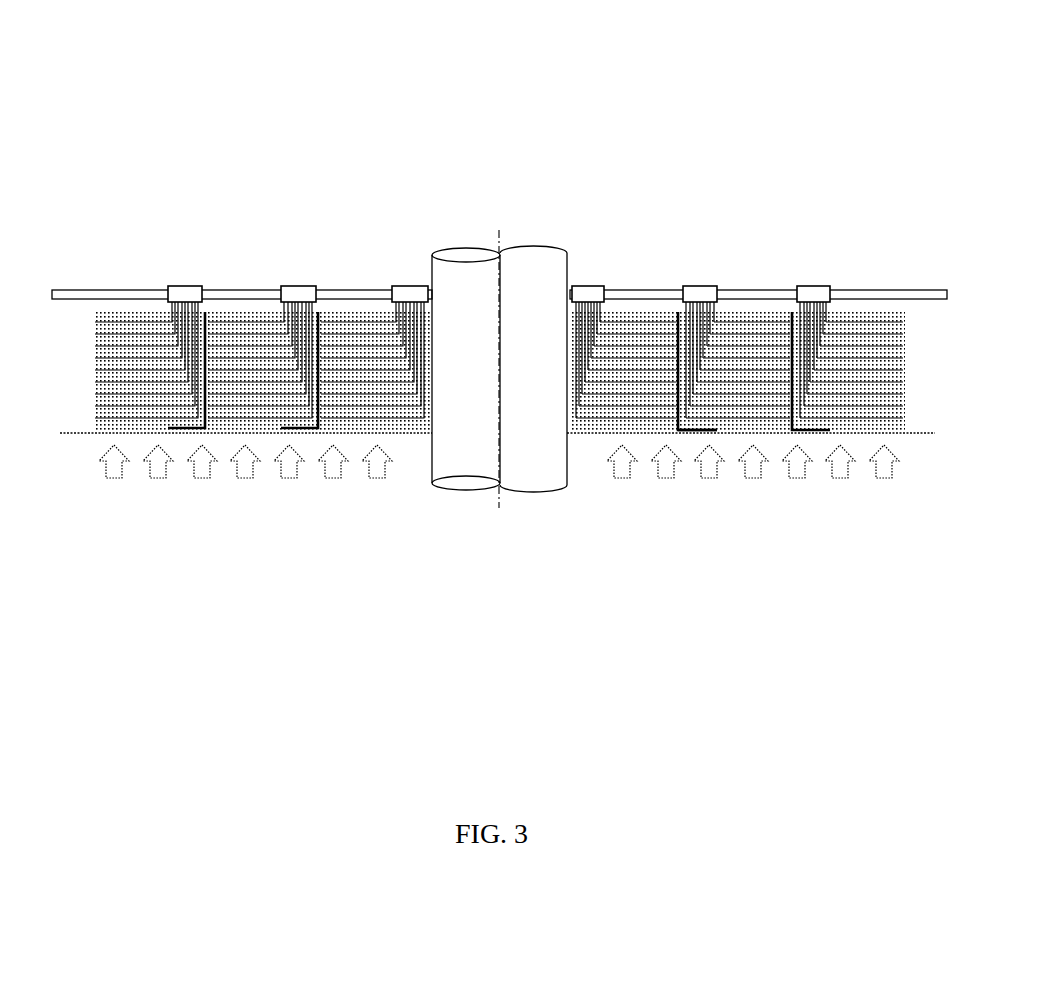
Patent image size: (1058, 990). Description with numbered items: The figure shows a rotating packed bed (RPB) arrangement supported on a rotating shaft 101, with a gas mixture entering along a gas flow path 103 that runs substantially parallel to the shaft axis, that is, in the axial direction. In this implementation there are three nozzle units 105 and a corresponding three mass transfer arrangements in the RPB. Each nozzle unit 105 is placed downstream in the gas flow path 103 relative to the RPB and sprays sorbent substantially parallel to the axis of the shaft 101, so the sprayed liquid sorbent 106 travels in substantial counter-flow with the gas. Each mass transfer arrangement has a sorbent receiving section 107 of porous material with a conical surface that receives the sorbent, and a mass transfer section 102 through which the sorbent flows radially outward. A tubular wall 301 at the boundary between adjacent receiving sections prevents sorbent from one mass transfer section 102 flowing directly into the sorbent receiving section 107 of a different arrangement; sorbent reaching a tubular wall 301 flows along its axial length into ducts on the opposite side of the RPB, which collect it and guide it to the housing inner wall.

The rotating shaft 101 is at (468, 272).
The mass transfer section 102 is at (866, 348).
The gas flow path 103 is at (287, 463).
The nozzle unit 105 is at (820, 292).
The sprayed liquid sorbent 106 is at (588, 333).
The sorbent receiving section 107 is at (697, 410).
The tubular wall 301 is at (316, 348).